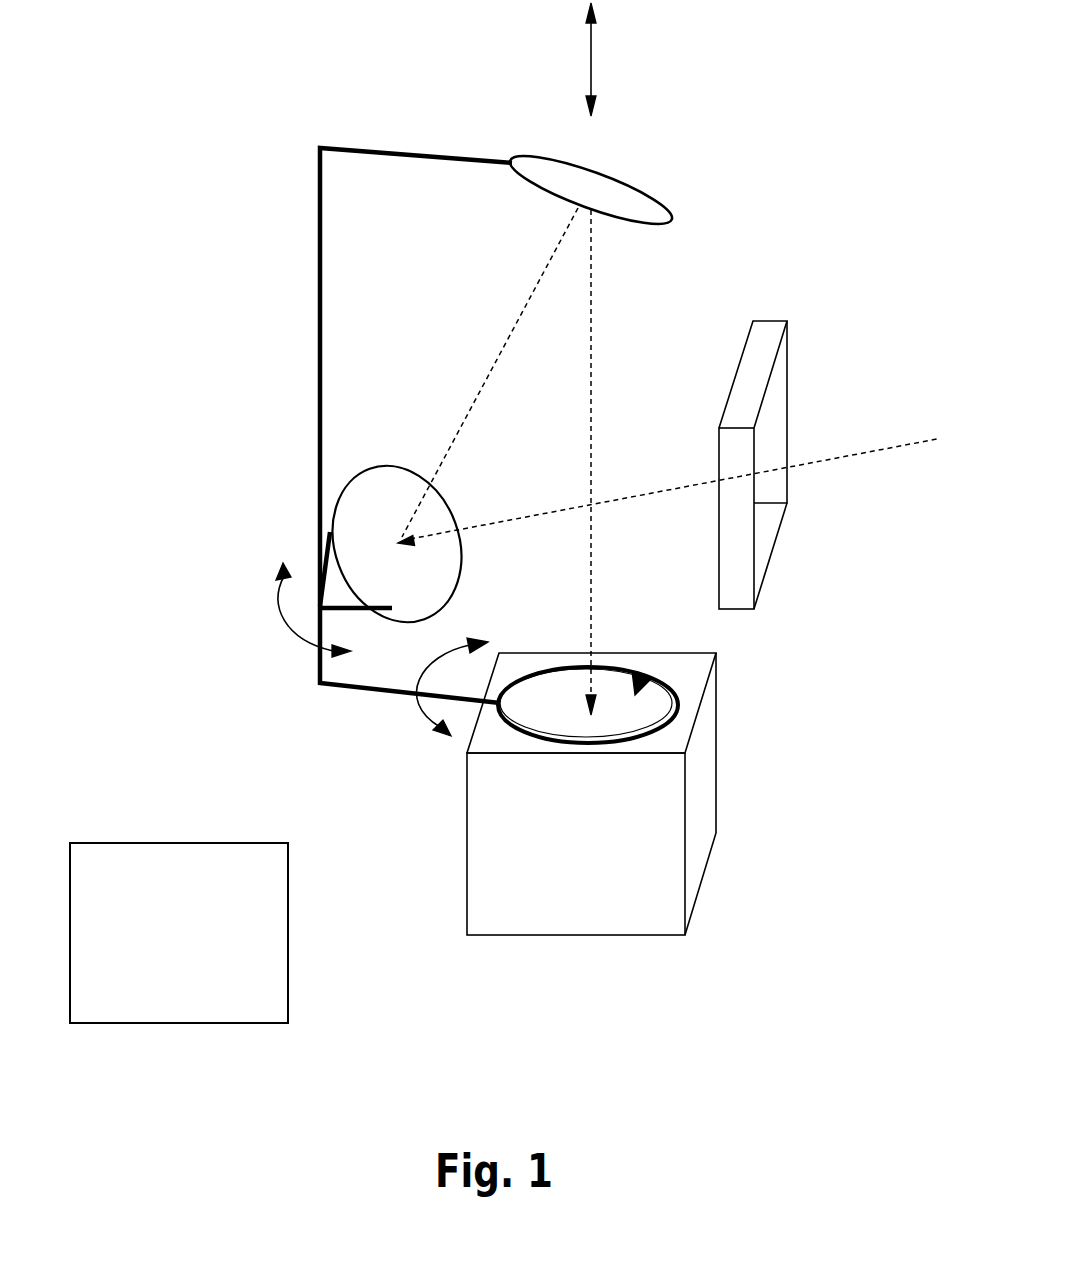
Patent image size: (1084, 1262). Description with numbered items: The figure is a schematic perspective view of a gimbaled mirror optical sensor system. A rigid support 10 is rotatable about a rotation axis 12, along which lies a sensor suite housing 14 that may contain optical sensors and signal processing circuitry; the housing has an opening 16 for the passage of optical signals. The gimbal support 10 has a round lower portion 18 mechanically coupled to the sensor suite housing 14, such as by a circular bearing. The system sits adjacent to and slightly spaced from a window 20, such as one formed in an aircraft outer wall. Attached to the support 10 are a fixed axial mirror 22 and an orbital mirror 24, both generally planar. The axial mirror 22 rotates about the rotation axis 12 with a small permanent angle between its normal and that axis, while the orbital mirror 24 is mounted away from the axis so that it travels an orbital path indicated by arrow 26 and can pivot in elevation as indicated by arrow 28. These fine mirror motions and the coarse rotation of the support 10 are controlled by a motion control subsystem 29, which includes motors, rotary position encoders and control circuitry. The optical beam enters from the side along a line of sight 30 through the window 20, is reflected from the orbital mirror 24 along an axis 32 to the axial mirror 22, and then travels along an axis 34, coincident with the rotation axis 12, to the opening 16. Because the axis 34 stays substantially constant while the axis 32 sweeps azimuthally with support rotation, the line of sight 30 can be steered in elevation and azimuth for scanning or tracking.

The rigid support 10 is at (358, 425).
The rotation axis 12 is at (656, 59).
The sensor suite housing 14 is at (646, 794).
The opening 16 is at (606, 680).
The round lower portion 18 is at (657, 693).
The window 20 is at (804, 437).
The fixed axial mirror 22 is at (654, 187).
The orbital mirror 24 is at (355, 524).
The arrow 26 is at (400, 710).
The arrow 28 is at (273, 635).
The motion control subsystem 29 is at (236, 940).
The line of sight 30 is at (671, 492).
The axis 32 is at (484, 372).
The axis 34 is at (644, 462).